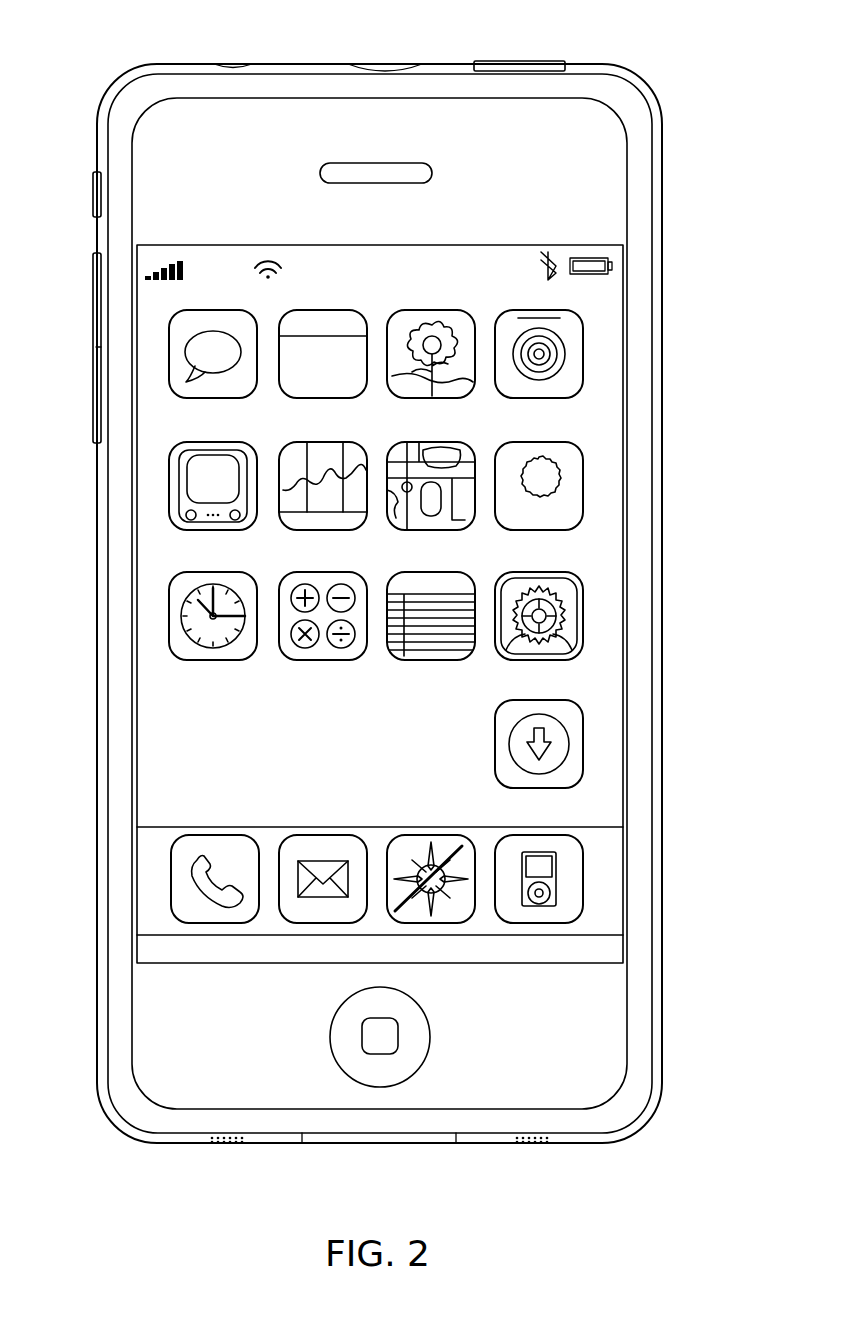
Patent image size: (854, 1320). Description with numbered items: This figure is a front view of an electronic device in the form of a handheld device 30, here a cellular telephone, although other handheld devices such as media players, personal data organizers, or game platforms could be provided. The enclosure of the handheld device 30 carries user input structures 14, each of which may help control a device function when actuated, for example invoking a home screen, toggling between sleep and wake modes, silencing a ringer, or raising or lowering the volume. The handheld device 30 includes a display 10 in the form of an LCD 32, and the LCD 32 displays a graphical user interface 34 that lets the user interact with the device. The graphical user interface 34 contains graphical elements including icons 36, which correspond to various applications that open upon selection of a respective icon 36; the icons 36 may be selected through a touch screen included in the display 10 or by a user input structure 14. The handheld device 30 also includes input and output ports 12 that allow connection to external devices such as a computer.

The display 10 is at (606, 466).
The input and output (I/O) ports 12 is at (232, 66).
The user input structures 14 is at (520, 61).
The handheld device 30 is at (120, 38).
The LCD 32 is at (609, 720).
The graphical user interface (GUI) 34 is at (152, 576).
The icons 36 is at (430, 310).